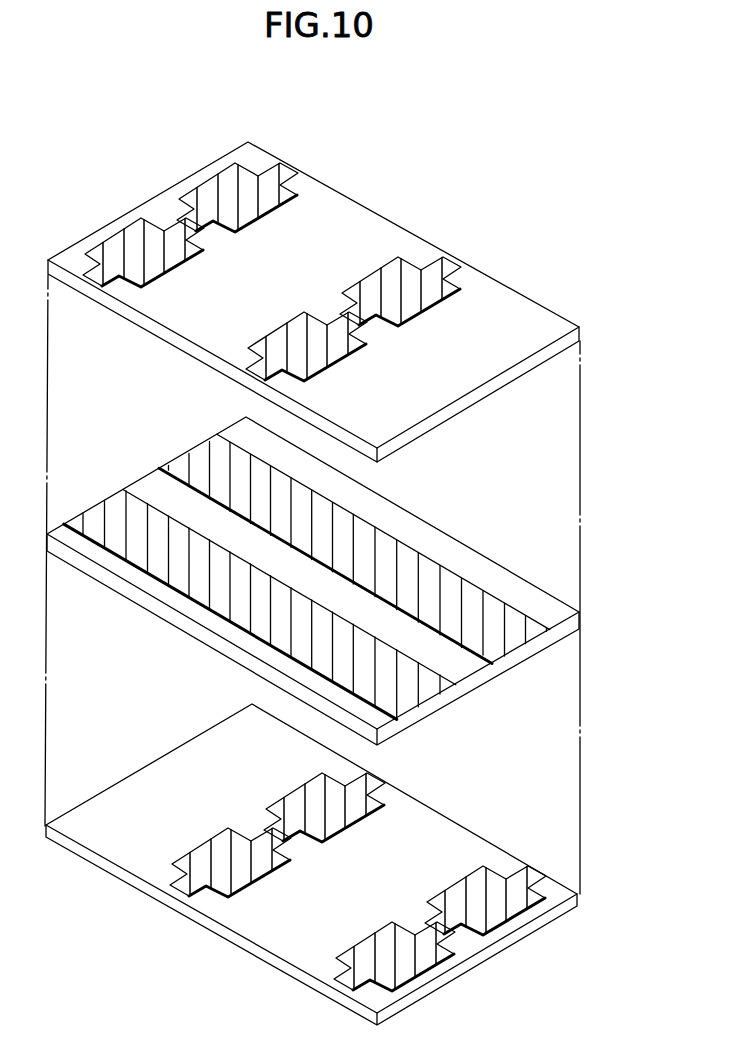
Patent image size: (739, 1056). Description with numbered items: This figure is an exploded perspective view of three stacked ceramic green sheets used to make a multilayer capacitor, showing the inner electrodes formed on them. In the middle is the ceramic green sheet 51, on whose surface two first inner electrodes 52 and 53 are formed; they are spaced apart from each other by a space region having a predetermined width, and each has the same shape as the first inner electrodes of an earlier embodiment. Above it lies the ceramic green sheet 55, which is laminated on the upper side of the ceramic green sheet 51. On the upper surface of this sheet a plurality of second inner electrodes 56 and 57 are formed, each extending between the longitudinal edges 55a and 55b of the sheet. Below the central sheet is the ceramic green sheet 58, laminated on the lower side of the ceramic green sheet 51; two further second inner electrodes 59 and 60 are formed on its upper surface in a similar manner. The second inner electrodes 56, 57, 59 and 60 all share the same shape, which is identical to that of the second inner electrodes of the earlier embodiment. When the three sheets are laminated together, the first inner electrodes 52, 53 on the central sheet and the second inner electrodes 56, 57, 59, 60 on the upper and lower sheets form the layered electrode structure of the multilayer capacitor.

The ceramic green sheet 51 is at (346, 581).
The first inner electrode 52 is at (433, 692).
The first inner electrode 53 is at (510, 650).
The ceramic green sheet 55 is at (313, 302).
The longitudinal edge 55a is at (202, 360).
The longitudinal edge 55b is at (405, 229).
The second inner electrode 56 is at (167, 285).
The second inner electrode 57 is at (363, 267).
The ceramic green sheet 58 is at (348, 864).
The second inner electrode 59 is at (178, 839).
The second inner electrode 60 is at (338, 943).